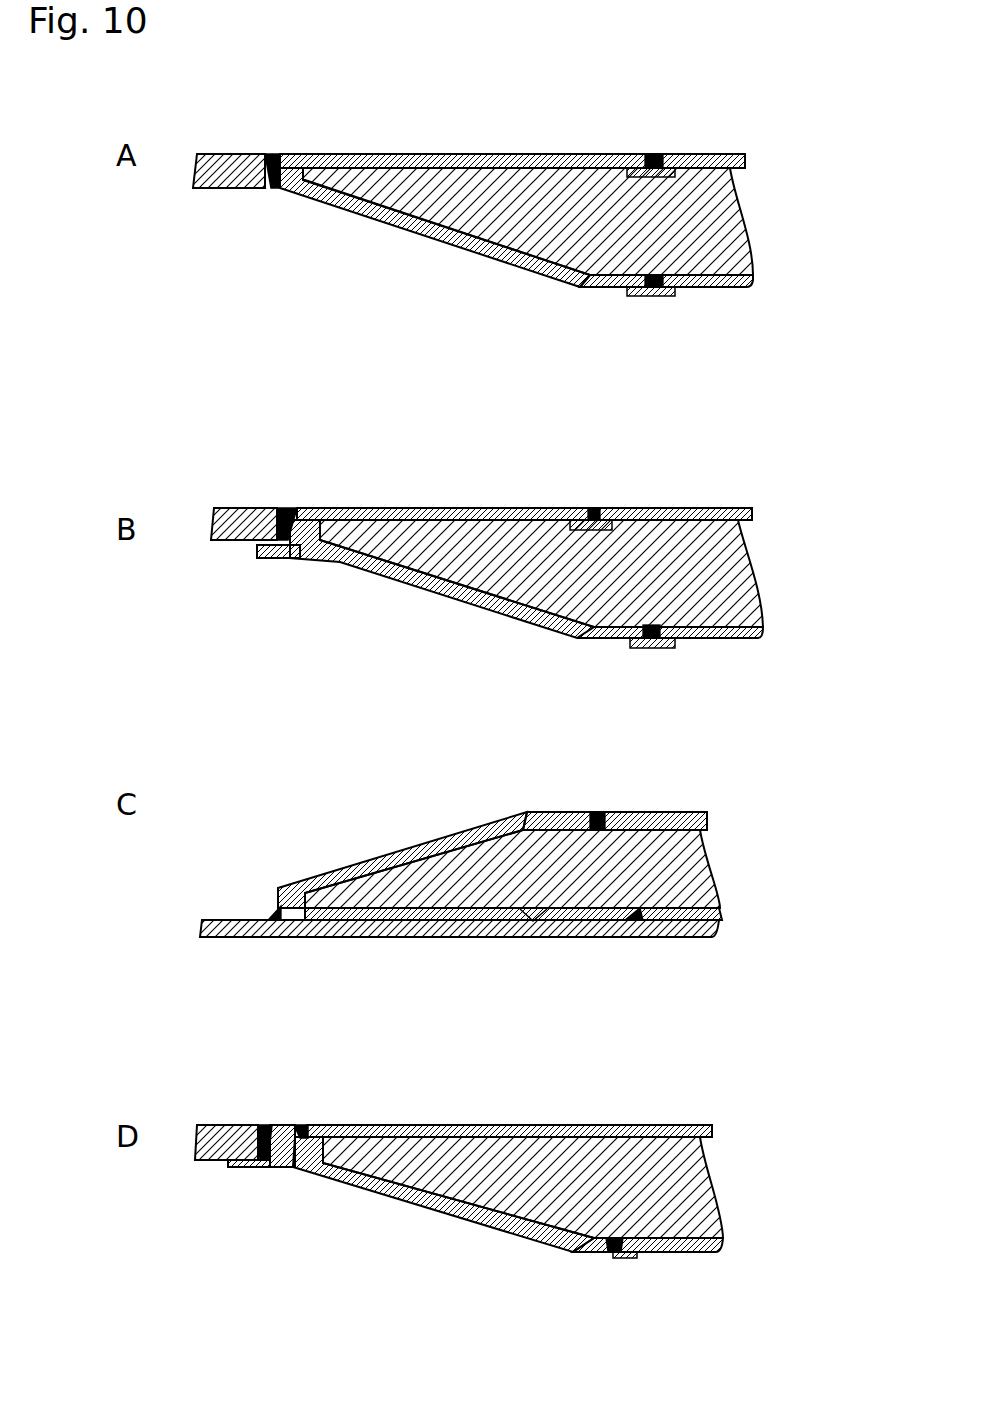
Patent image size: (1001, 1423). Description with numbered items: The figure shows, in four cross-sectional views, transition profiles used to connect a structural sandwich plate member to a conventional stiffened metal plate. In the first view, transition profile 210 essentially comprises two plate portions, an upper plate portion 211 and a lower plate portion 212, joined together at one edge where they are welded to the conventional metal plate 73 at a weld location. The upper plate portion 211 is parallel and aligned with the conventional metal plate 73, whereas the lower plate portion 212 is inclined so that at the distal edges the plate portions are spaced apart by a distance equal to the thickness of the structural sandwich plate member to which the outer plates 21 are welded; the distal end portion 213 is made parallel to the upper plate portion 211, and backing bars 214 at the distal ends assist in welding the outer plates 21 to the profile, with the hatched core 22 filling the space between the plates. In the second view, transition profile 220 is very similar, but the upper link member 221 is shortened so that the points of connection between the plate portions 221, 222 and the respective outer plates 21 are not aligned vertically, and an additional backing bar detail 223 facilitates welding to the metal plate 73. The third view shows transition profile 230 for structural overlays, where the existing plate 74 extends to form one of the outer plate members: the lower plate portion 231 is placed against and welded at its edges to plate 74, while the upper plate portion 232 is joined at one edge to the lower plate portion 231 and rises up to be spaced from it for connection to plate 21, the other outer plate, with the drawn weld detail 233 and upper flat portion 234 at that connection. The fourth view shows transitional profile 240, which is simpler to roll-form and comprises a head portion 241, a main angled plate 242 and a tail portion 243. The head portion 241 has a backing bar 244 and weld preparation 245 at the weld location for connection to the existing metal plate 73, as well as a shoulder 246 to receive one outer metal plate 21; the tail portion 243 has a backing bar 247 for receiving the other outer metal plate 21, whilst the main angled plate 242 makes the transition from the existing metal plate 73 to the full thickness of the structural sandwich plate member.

In FIG. 10A, the outer plate 21 is at (697, 157).
In FIG. 10C, the outer plate 21 is at (703, 842).
In FIG. 10D, the outer plate 21 is at (687, 1125).
In FIG. 10A, the core body 22 is at (626, 232).
In FIG. 10B, the core body 22 is at (665, 597).
In FIG. 10C, the core body 22 is at (551, 877).
In FIG. 10D, the core body 22 is at (590, 1192).
In FIG. 10A, the conventional metal plate 73 is at (235, 190).
In FIG. 10B, the conventional metal plate 73 is at (245, 508).
In FIG. 10D, the conventional metal plate 73 is at (218, 1125).
In FIG. 10C, the existing plate 74 is at (320, 937).
In FIG. 10A, the transition profile 210 is at (383, 154).
In FIG. 10A, the upper plate portion 211 is at (495, 154).
In FIG. 10A, the lower plate portion 212 is at (443, 233).
In FIG. 10A, the distal end portion 213 is at (607, 290).
In FIG. 10A, the backing bar 214 is at (598, 156).
In FIG. 10B, the backing bar 214 is at (605, 538).
In FIG. 10B, the transition profile 220 is at (333, 508).
In FIG. 10B, the upper link member 221 is at (410, 508).
In FIG. 10B, the plate portion 222 is at (500, 610).
In FIG. 10B, the lower plate 223 is at (268, 560).
In FIG. 10C, the transition profile 230 is at (347, 867).
In FIG. 10C, the lower plate portion 231 is at (537, 928).
In FIG. 10C, the upper plate portion 232 is at (402, 857).
In FIG. 10C, the fixing portion 233 is at (560, 812).
In FIG. 10C, the upper plate 234 is at (685, 835).
In FIG. 10D, the transitional profile 240 is at (498, 1237).
In FIG. 10D, the head portion 241 is at (295, 1167).
In FIG. 10D, the main angled plate 242 is at (402, 1203).
In FIG. 10D, the tail portion 243 is at (590, 1260).
In FIG. 10D, the backing bar 244 is at (250, 1167).
In FIG. 10D, the weld preparation 245 is at (270, 1125).
In FIG. 10D, the shoulder 246 is at (307, 1125).
In FIG. 10D, the backing bar 247 is at (628, 1260).